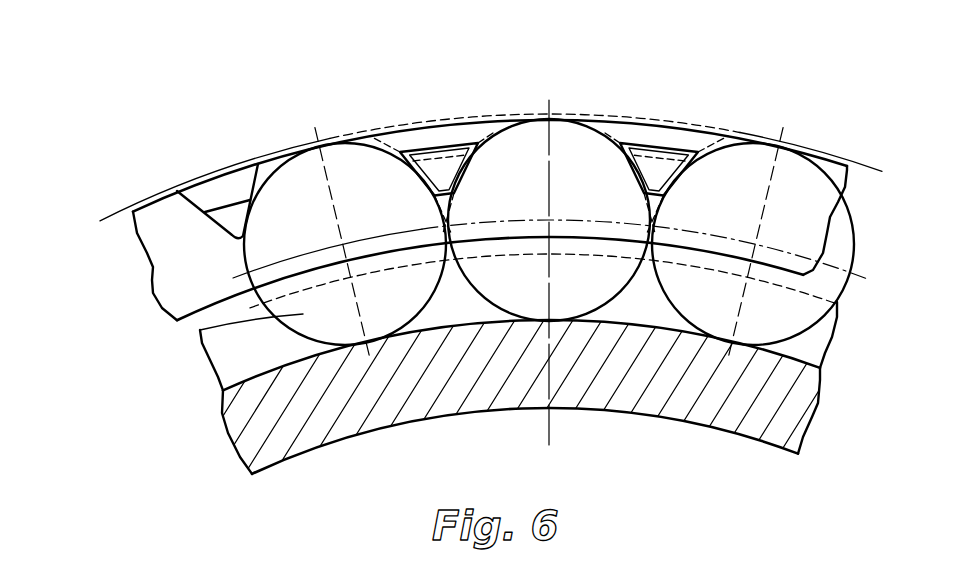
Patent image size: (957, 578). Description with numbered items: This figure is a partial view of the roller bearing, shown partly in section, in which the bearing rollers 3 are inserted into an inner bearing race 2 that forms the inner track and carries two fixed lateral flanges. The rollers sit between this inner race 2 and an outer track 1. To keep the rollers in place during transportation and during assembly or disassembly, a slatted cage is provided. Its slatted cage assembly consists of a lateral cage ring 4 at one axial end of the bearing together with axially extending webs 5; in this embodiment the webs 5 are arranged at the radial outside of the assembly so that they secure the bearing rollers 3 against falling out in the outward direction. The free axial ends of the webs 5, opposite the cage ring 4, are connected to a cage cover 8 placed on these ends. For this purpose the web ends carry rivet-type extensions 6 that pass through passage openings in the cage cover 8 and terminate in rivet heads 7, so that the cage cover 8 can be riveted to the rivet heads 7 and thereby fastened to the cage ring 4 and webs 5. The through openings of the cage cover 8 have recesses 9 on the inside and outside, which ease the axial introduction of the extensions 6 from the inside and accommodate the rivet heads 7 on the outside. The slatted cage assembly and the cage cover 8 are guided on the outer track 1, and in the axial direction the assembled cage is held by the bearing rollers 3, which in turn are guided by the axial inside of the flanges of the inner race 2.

The outer track 1 is at (110, 205).
The inner bearing race 2 is at (257, 432).
The bearing rollers 3 is at (210, 360).
The cage ring 4 is at (170, 270).
The webs 5 is at (233, 182).
The extensions 6 is at (232, 217).
The rivet heads 7 is at (438, 163).
The cage cover 8 is at (485, 131).
The recesses 9 is at (660, 150).